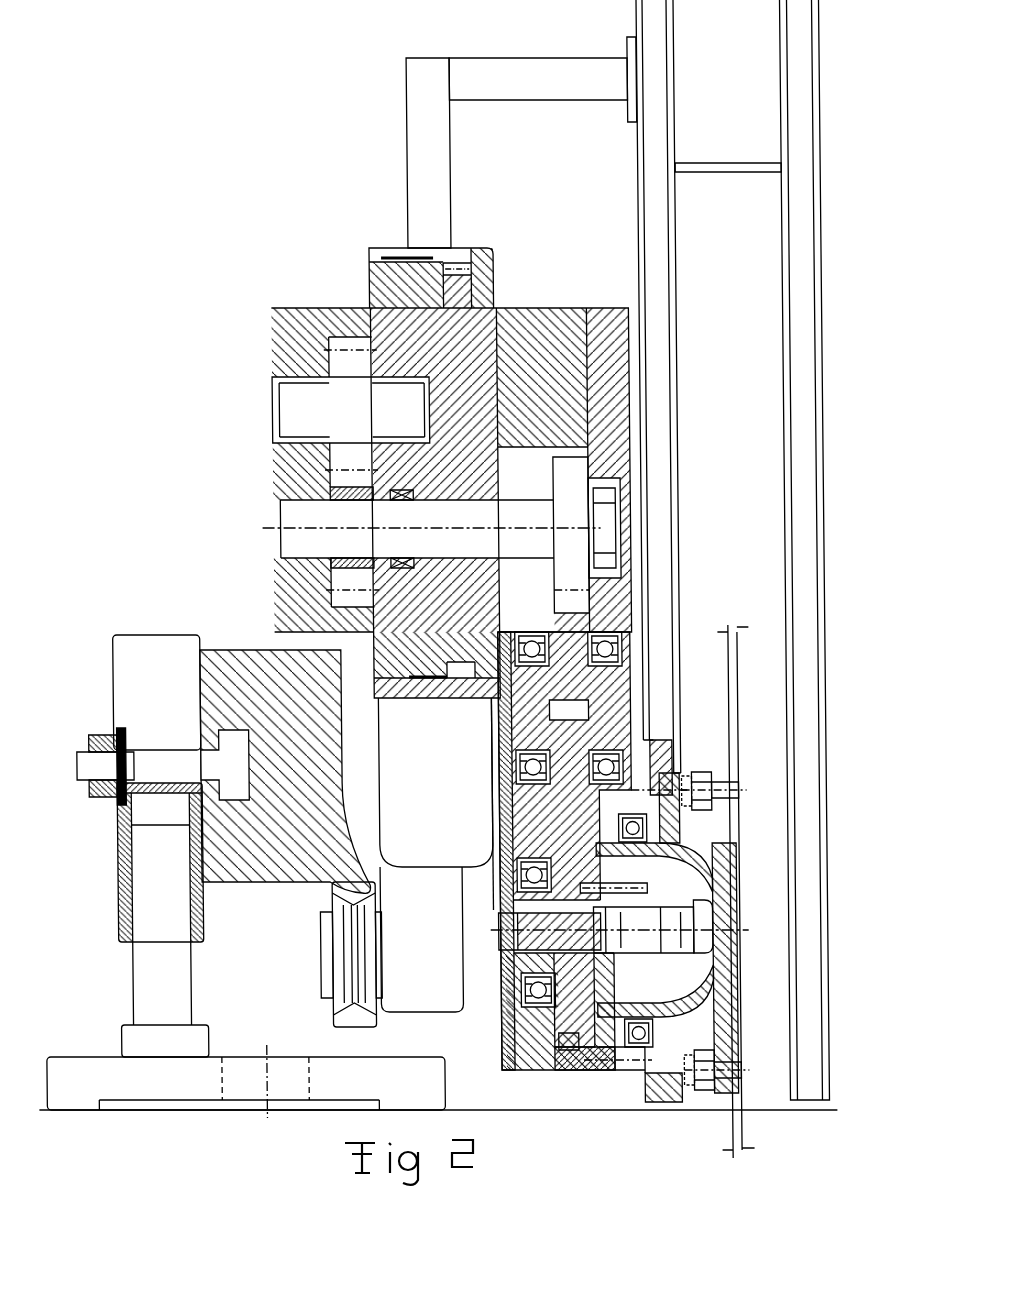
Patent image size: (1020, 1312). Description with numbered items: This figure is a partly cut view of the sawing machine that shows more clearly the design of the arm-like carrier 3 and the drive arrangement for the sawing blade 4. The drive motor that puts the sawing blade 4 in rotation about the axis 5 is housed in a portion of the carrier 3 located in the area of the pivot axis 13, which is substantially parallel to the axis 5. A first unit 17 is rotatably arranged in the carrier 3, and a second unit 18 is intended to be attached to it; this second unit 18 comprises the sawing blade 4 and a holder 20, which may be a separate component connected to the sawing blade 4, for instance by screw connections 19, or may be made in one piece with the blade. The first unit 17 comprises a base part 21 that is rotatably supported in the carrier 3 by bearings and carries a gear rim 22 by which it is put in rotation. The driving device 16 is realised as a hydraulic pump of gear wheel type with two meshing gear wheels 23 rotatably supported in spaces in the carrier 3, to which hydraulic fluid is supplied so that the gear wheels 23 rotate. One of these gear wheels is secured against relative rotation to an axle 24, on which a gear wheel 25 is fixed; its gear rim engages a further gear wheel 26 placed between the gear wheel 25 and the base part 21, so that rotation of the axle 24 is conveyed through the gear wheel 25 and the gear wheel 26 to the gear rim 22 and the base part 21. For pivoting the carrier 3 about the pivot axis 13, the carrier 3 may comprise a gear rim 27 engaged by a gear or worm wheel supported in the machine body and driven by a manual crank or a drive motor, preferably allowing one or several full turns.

The carrier 3 is at (493, 1027).
The sawing blade 4 is at (737, 703).
The axis 5 is at (495, 930).
The pivot axis 13 is at (262, 466).
The driving device 16 is at (250, 542).
The first unit 17 is at (575, 1045).
The second unit 18 is at (756, 1033).
The screw connections 19 is at (722, 787).
The holder 20 is at (735, 853).
The base part 21 is at (575, 852).
The gear rim 22 is at (585, 1070).
The gear wheels 23 is at (343, 398).
The axle 24 is at (517, 540).
The gear wheel 25 is at (565, 490).
The further gear wheel 26 is at (543, 685).
The gear rim 27 is at (462, 263).